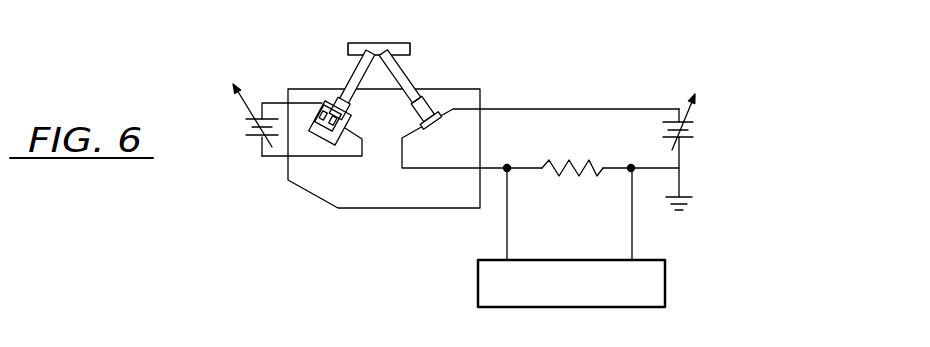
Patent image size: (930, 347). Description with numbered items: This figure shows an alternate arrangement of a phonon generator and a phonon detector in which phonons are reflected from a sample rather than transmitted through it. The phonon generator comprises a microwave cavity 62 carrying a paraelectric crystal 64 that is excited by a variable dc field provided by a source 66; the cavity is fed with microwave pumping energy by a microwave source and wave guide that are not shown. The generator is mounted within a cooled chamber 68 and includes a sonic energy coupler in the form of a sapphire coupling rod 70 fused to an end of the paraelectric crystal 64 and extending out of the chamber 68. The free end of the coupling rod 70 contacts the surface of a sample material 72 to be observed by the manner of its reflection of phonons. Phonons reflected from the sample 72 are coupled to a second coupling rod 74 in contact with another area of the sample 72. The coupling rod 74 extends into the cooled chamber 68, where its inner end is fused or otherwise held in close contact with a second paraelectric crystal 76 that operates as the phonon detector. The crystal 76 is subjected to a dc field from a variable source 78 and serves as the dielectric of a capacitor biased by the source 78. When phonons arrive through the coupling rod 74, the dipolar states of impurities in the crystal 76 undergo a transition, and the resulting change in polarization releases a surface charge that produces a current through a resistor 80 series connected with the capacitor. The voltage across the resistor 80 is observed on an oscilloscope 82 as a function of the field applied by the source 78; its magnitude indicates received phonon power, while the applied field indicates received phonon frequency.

The microwave cavity 62 is at (316, 119).
The paraelectric crystal 64 is at (317, 140).
The variable dc field source 66 is at (250, 128).
The cooled chamber 68 is at (481, 96).
The sapphire coupling rod 70 is at (350, 83).
The sample material 72 is at (411, 44).
The second coupling rod 74 is at (408, 76).
The second paraelectric crystal 76 is at (433, 130).
The variable dc source 78 is at (700, 108).
The resistor 80 is at (565, 164).
The oscilloscope 82 is at (666, 272).